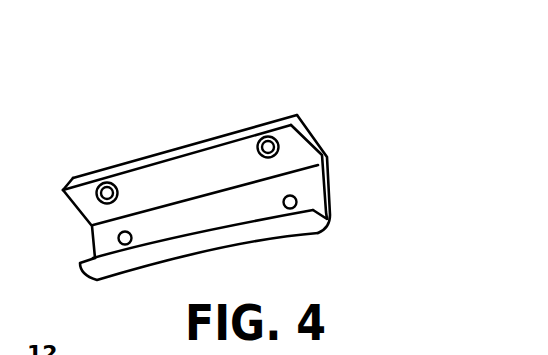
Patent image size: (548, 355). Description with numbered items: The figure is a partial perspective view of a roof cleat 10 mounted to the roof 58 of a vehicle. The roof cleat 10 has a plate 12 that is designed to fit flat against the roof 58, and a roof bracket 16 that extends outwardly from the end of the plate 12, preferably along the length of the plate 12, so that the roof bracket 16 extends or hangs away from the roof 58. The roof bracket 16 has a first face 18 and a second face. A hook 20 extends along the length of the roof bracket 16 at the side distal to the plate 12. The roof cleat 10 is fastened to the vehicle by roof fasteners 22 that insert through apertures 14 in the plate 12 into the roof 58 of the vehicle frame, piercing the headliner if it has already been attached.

The roof cleat 10 is at (143, 157).
The plate 12 is at (318, 138).
The apertures 14 is at (258, 152).
The roof bracket 16 is at (333, 210).
The first face 18 is at (107, 235).
The hook 20 is at (258, 229).
The roof fasteners 22 is at (103, 185).
The roof 58 is at (329, 90).